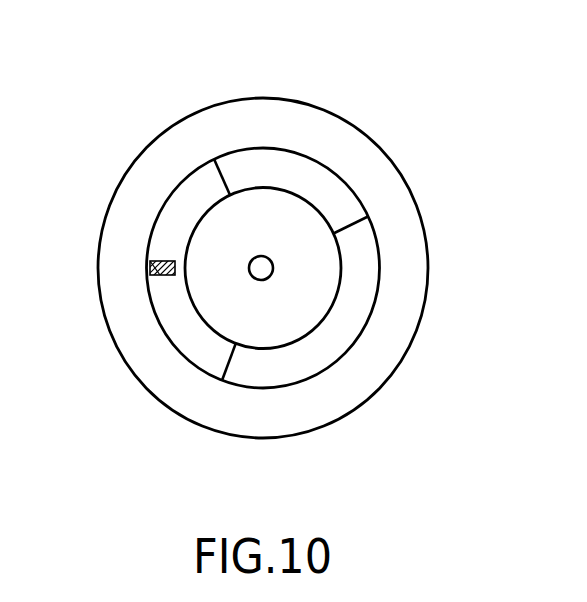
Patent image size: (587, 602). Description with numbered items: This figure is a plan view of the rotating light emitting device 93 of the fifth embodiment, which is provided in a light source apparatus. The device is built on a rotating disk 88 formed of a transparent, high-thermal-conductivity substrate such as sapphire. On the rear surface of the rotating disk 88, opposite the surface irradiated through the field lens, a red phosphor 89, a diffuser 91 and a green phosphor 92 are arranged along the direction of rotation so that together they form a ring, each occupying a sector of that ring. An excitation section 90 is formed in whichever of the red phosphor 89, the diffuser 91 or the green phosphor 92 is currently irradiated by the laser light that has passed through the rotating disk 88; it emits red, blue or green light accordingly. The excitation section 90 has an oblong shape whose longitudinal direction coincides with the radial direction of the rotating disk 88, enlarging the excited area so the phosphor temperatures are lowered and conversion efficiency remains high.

The rotating disk 88 is at (407, 267).
The red phosphor 89 is at (177, 196).
The excitation section 90 is at (150, 264).
The diffuser 91 is at (318, 182).
The green phosphor 92 is at (327, 345).
The rotating light emitting device 93 is at (431, 83).